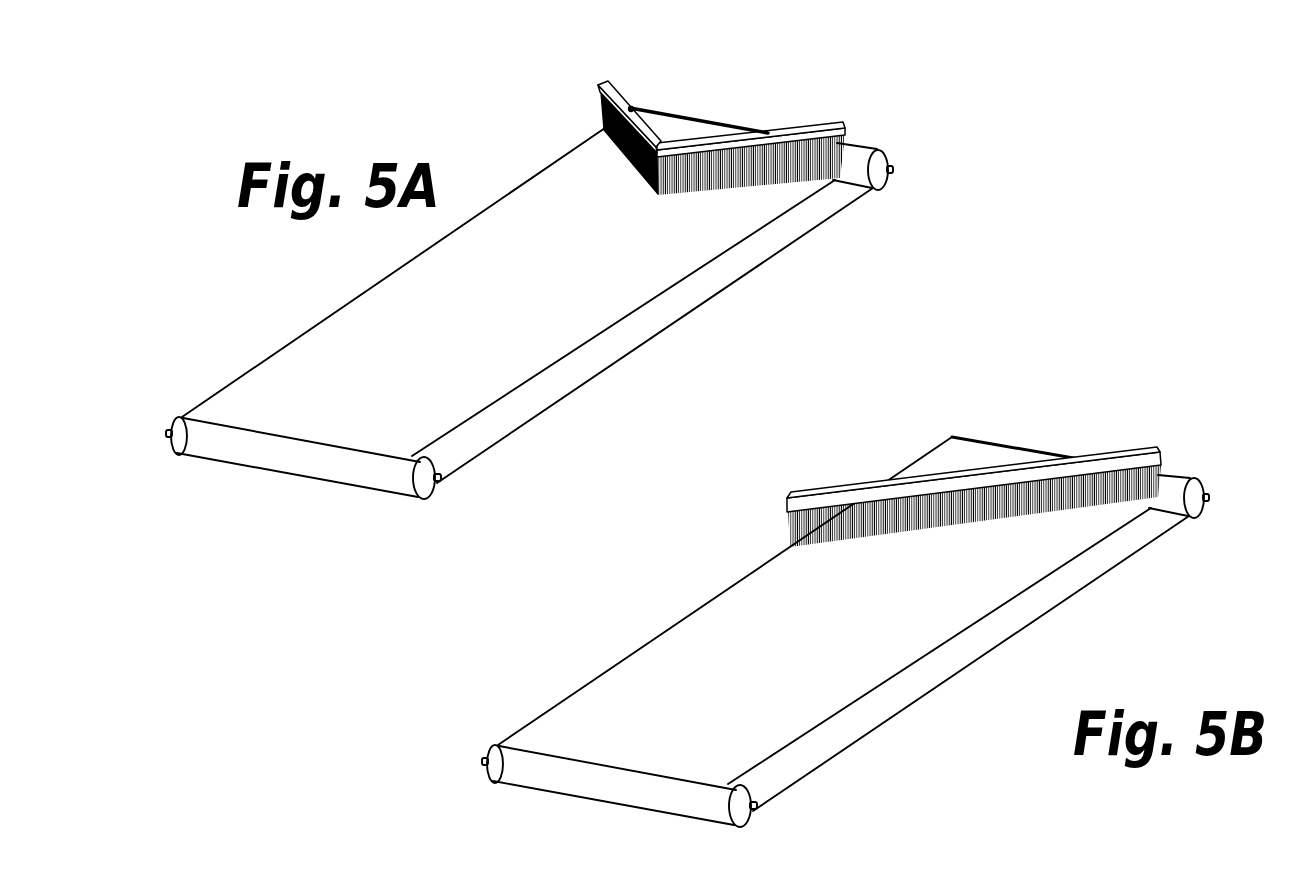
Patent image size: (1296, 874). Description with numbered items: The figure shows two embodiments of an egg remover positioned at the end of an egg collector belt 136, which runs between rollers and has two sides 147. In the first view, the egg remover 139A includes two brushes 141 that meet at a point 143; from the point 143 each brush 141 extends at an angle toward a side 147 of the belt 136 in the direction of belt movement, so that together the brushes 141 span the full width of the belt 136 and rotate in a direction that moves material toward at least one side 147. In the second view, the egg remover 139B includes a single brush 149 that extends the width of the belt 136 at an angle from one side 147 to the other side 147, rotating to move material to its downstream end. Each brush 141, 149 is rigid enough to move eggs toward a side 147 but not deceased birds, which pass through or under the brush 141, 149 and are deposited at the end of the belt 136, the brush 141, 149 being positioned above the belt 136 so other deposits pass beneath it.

In FIG. 5A, the belt 136 is at (504, 316).
In FIG. 5B, the belt 136 is at (839, 654).
In FIG. 5A, the side 147 is at (478, 190).
In FIG. 5B, the side 147 is at (605, 659).
In FIG. 5A, the egg remover 139A is at (723, 102).
In FIG. 5B, the egg remover 139B is at (974, 452).
In FIG. 5A, the brush 141 is at (618, 98).
In FIG. 5A, the point 143 is at (660, 137).
In FIG. 5B, the brush 149 is at (967, 478).